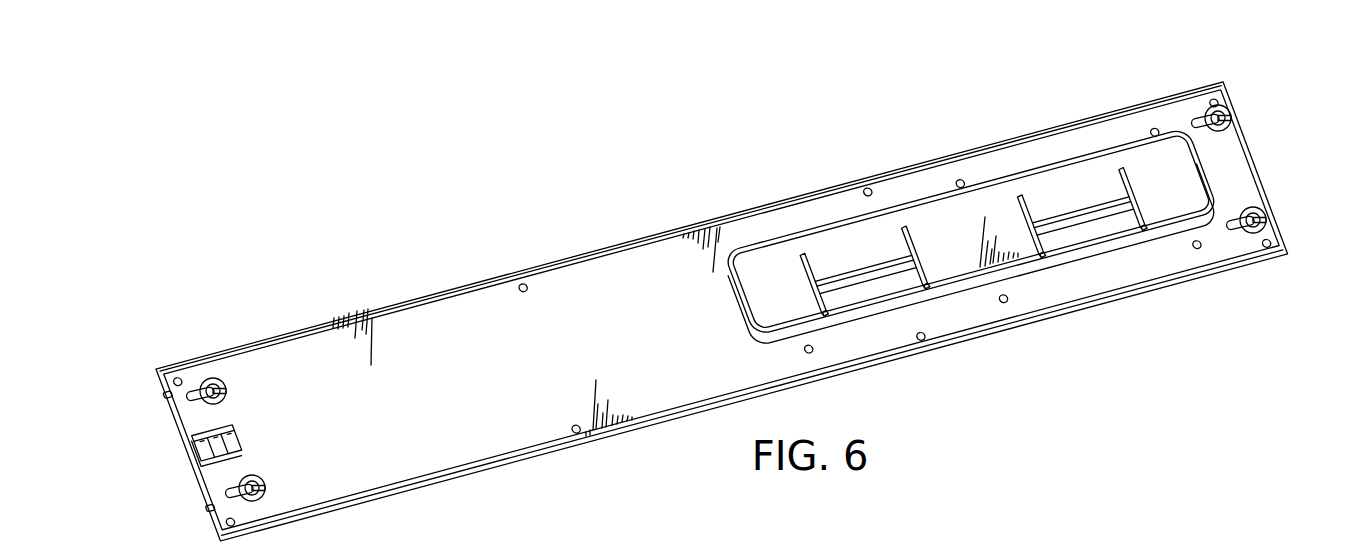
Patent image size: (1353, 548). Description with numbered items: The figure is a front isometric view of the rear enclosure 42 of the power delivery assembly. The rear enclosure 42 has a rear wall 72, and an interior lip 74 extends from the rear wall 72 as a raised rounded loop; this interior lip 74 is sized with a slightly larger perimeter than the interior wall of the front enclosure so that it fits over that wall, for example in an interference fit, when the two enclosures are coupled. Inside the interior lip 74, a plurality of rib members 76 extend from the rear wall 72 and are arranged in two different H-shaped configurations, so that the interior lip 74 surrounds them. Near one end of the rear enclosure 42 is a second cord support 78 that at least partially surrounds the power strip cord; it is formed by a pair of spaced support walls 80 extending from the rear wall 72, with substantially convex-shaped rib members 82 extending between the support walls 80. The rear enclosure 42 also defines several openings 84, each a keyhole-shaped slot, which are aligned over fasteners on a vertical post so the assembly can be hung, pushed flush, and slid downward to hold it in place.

The rear enclosure 42 is at (533, 216).
The rear wall 72 is at (413, 322).
The interior lip 74 is at (784, 243).
The rib members 76 is at (850, 266).
The second cord support 78 is at (265, 404).
The support walls 80 is at (192, 424).
The rib members 82 is at (236, 438).
The openings 84 is at (190, 378).